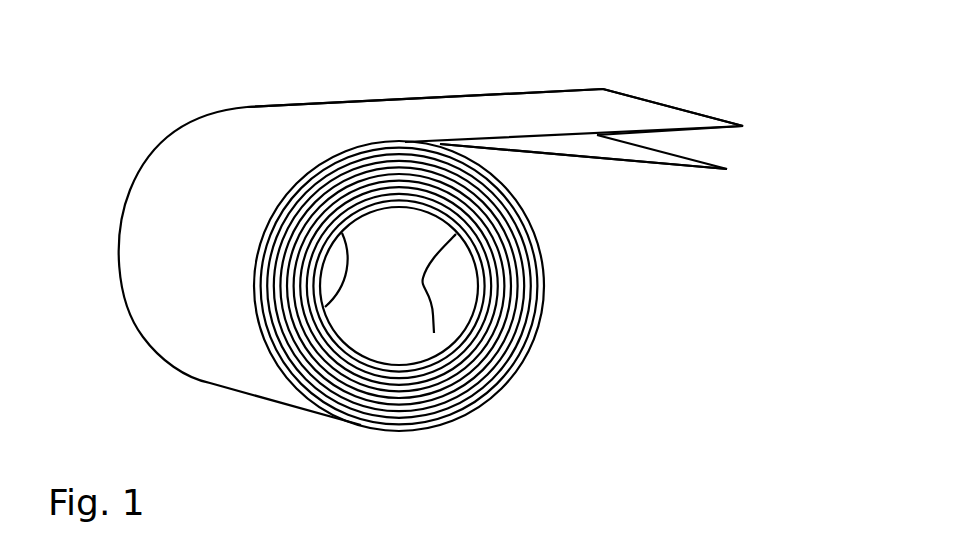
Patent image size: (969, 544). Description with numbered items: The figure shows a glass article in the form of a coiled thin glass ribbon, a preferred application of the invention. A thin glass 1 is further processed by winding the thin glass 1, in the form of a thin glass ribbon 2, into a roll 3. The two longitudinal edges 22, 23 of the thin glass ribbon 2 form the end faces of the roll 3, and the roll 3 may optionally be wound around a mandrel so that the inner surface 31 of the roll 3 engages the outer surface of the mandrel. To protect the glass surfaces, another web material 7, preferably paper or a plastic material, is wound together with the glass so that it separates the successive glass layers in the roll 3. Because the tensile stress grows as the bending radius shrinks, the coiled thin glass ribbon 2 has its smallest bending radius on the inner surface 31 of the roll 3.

The thin glass 1 is at (545, 103).
The thin glass ribbon 2 is at (484, 104).
The roll 3 is at (128, 148).
The web material 7 is at (587, 157).
The edge 22 is at (697, 131).
The edge 23 is at (433, 98).
The inner surface 31 is at (434, 333).